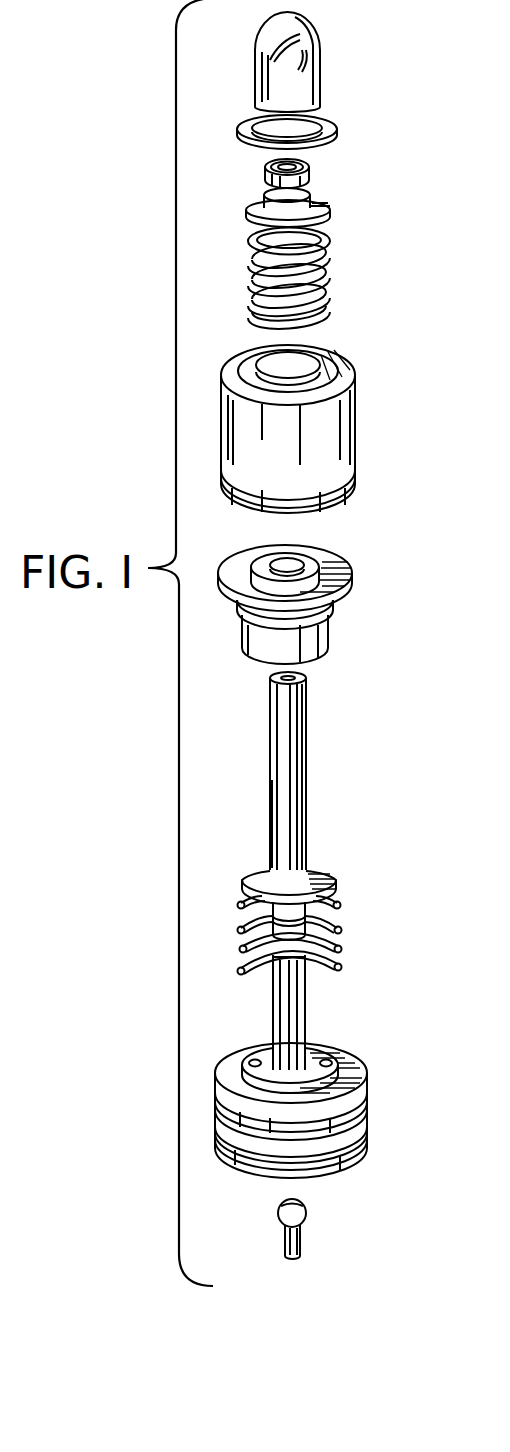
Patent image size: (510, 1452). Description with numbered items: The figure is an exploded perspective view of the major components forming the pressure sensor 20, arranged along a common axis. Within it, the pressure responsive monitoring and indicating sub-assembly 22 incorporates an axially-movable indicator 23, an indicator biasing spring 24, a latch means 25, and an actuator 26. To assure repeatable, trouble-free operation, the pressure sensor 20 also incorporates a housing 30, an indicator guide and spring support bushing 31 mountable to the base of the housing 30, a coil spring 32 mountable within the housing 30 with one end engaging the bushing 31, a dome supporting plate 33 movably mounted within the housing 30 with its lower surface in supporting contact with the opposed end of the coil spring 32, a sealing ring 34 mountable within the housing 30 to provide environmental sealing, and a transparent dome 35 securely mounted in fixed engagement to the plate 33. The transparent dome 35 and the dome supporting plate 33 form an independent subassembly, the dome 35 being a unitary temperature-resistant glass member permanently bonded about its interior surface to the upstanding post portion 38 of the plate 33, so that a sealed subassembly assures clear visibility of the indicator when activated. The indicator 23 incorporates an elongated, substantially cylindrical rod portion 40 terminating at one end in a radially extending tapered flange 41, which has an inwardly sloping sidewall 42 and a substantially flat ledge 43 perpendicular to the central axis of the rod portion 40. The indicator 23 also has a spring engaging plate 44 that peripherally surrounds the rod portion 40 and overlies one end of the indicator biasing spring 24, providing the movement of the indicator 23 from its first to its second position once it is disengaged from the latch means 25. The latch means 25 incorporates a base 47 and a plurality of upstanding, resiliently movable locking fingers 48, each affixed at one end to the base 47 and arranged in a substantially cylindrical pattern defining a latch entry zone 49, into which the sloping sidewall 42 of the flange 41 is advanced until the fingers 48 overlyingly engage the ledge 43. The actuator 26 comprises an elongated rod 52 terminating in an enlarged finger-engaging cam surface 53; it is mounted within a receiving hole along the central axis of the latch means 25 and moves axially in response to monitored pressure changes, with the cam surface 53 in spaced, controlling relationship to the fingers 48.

The pressure sensor 20 is at (374, 128).
The pressure responsive monitoring and indicating sub-assembly 22 is at (341, 866).
The indicator 23 is at (309, 722).
The indicator biasing spring 24 is at (240, 900).
The latch means 25 is at (271, 1010).
The actuator 26 is at (306, 1242).
The housing 30 is at (348, 365).
The indicator guide and spring support bushing 31 is at (345, 562).
The coil spring 32 is at (328, 249).
The dome supporting plate 33 is at (328, 208).
The sealing ring 34 is at (336, 118).
The transparent dome 35 is at (312, 30).
The post portion 38 is at (300, 172).
The rod portion 40 is at (309, 812).
The tapered flange 41 is at (265, 920).
The sloping sidewall 42 is at (342, 921).
The ledge 43 is at (340, 903).
The spring engaging plate 44 is at (256, 872).
The base 47 is at (366, 1086).
The locking fingers 48 is at (300, 1012).
The latch entry zone 49 is at (243, 950).
The elongated rod 52 is at (285, 1232).
The finger-engaging cam surface 53 is at (306, 1208).